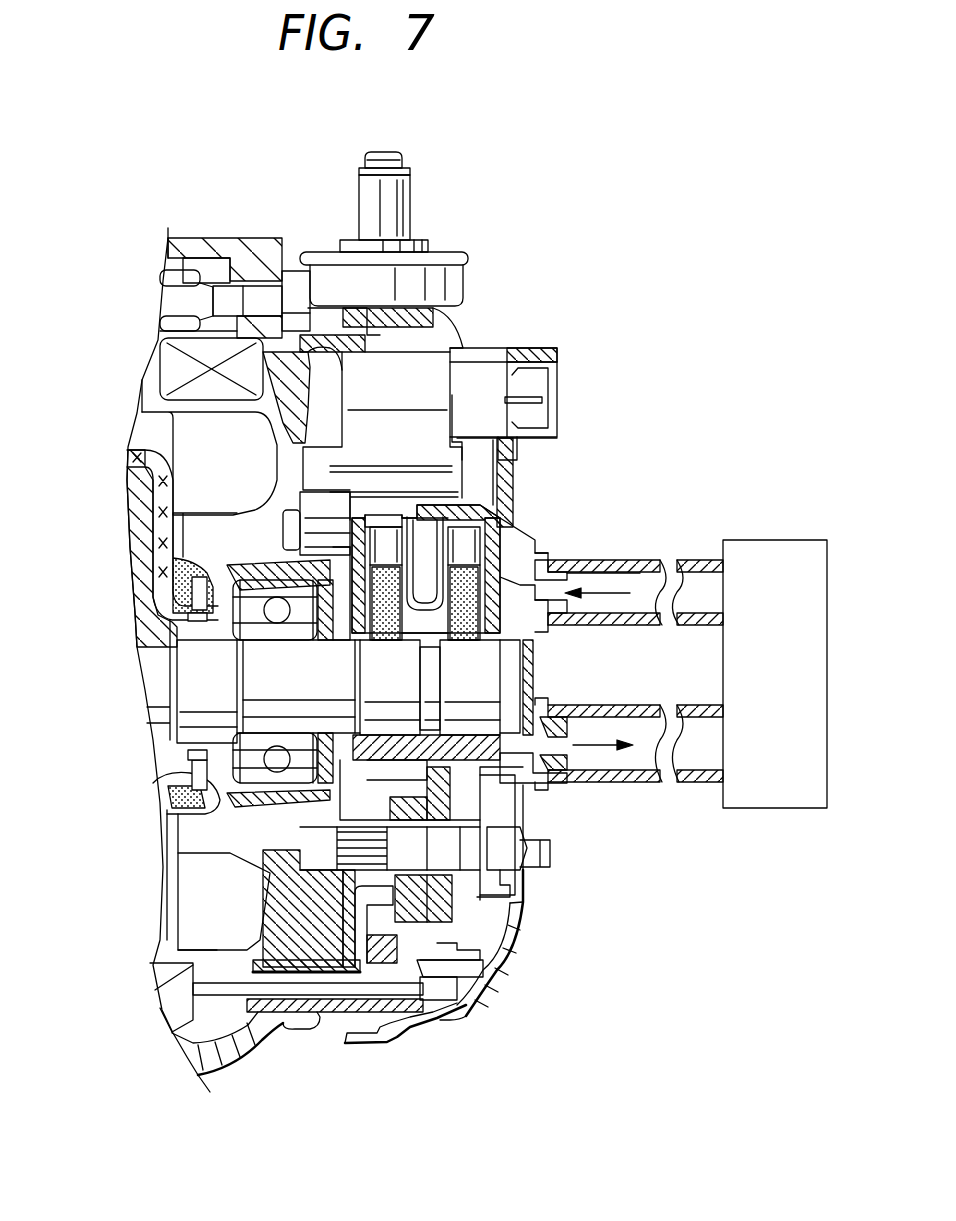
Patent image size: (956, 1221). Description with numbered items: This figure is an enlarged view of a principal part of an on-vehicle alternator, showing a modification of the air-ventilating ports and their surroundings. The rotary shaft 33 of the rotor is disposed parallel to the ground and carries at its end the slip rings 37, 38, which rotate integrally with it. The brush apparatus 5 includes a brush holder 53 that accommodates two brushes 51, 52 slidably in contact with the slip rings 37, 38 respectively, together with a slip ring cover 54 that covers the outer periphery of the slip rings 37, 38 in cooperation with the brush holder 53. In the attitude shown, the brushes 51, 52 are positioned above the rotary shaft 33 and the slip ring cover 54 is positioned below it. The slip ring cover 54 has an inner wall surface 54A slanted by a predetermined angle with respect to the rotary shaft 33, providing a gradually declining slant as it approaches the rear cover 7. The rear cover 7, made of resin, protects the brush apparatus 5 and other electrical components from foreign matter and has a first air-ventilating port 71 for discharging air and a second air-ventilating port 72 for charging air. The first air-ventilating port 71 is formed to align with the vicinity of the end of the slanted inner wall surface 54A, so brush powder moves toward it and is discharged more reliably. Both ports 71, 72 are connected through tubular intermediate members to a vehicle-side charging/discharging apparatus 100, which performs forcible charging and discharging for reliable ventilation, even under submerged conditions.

The brush apparatus 5 is at (495, 535).
The rear cover 7 is at (497, 975).
The rotary shaft 33 is at (263, 690).
The slip ring 37 is at (395, 684).
The slip ring 38 is at (470, 657).
The brush 51 is at (380, 550).
The brush 52 is at (640, 562).
The brush holder 53 is at (488, 527).
The slip ring cover 54 is at (520, 807).
The inner wall surface 54A is at (527, 772).
The first air-ventilating port 71 is at (622, 775).
The second air-ventilating port 72 is at (636, 557).
The charging/discharging apparatus 100 is at (787, 540).